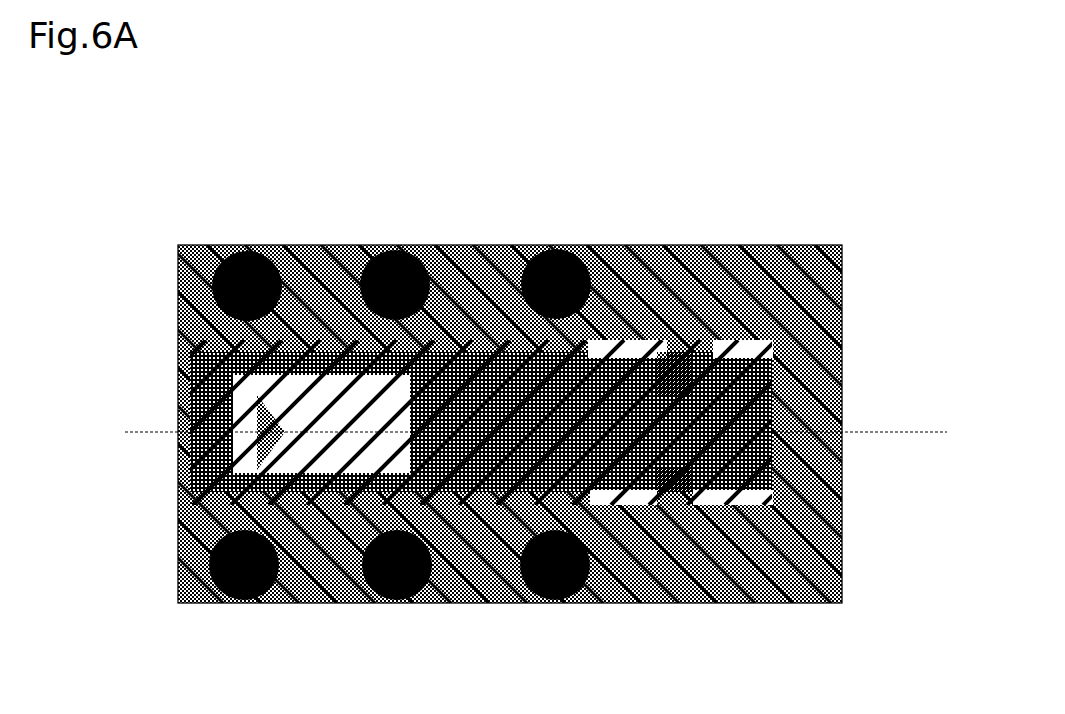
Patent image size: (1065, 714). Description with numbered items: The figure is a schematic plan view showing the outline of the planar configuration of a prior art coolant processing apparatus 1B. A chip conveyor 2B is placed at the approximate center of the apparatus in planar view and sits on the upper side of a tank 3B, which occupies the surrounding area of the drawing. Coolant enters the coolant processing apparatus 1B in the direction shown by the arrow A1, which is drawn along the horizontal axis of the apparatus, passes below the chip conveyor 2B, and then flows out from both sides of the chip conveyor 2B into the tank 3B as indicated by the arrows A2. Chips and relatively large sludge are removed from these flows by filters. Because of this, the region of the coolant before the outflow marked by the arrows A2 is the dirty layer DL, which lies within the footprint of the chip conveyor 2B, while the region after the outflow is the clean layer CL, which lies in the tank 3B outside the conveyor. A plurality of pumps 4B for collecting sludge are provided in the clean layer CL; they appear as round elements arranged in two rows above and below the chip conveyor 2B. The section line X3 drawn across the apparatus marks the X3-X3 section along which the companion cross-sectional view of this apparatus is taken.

The coolant processing apparatus 1B is at (243, 188).
The chip conveyor 2B is at (732, 350).
The tank 3B is at (842, 583).
The pumps 4B is at (278, 245).
The clean layer CL is at (790, 302).
The dirty layer DL is at (512, 414).
The arrow A1 is at (536, 417).
The arrows A2 is at (651, 422).
The section line X3 is at (140, 447).